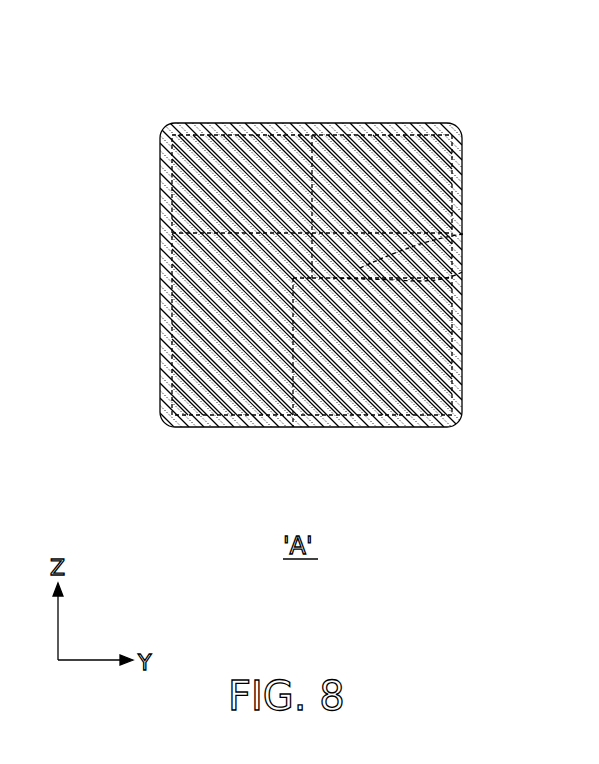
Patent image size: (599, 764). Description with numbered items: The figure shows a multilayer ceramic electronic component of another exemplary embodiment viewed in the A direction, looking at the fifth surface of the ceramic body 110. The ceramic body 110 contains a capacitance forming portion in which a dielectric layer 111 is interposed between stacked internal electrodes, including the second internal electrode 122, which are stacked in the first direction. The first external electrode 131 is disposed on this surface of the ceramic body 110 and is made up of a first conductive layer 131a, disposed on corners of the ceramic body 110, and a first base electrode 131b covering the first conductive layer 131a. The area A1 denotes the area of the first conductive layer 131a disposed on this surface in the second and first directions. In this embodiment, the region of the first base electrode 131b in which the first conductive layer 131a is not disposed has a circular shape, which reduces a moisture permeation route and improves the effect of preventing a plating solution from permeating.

The ceramic body 110 is at (366, 133).
The dielectric layer 111 is at (463, 234).
The second internal electrode 122 is at (462, 272).
The first external electrode 131 is at (305, 68).
The first conductive layer 131a is at (215, 128).
The first base electrode 131b is at (302, 128).
The area of the first conductive layer A1 is at (293, 427).